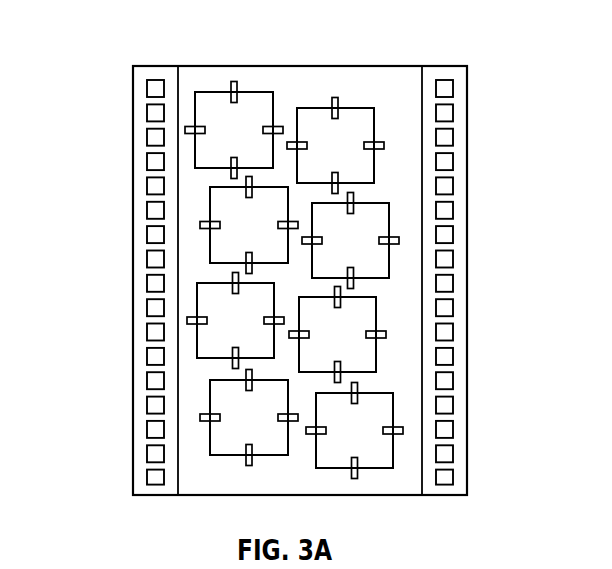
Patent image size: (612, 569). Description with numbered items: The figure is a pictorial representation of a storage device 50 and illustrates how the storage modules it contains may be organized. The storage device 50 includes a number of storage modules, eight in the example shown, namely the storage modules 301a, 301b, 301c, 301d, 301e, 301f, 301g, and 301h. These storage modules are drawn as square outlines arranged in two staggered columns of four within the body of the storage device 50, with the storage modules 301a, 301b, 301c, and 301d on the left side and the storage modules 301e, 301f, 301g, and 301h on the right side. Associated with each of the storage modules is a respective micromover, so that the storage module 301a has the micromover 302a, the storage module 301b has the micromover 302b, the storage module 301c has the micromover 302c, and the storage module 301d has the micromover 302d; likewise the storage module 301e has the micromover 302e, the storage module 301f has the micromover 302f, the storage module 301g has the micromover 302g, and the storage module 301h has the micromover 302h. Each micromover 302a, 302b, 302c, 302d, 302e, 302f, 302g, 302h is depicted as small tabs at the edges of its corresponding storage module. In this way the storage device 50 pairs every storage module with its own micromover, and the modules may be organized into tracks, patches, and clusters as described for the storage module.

The storage device 50 is at (493, 71).
The storage module 301a is at (203, 157).
The micromover 302a is at (195, 130).
The storage module 301b is at (222, 252).
The micromover 302b is at (210, 225).
The storage module 301c is at (207, 345).
The micromover 302c is at (197, 321).
The storage module 301d is at (222, 442).
The micromover 302d is at (210, 418).
The storage module 301e is at (367, 172).
The micromover 302e is at (383, 146).
The storage module 301f is at (387, 266).
The micromover 302f is at (390, 241).
The storage module 301g is at (375, 363).
The micromover 302g is at (377, 335).
The storage module 301h is at (388, 458).
The micromover 302h is at (394, 431).